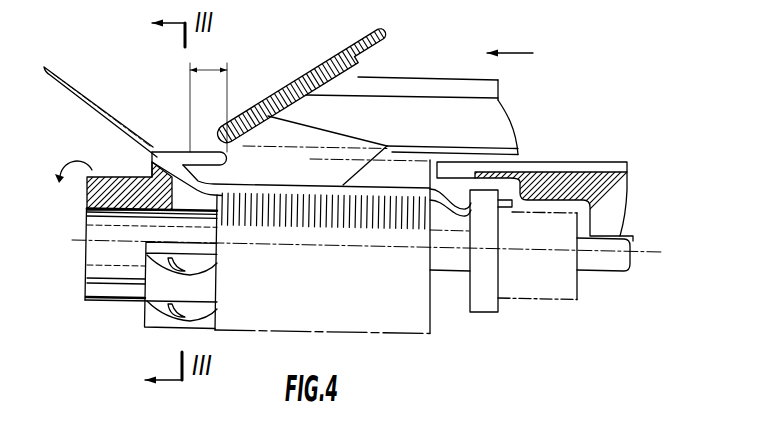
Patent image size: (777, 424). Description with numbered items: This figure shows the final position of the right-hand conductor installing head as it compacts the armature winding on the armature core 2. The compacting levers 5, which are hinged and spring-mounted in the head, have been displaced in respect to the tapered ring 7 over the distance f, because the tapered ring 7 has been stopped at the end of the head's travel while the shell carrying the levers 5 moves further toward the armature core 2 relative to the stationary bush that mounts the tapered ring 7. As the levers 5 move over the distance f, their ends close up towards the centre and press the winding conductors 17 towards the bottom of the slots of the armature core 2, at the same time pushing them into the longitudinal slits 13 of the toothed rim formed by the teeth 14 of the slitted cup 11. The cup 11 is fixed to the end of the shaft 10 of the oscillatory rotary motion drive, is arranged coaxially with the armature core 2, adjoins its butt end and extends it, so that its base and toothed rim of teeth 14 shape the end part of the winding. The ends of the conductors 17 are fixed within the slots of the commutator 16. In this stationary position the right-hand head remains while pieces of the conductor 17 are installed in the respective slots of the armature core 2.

The armature core 2 is at (405, 327).
The compacting levers 5 is at (310, 138).
The tapered ring 7 is at (247, 110).
The shaft 10 is at (90, 257).
The slitted cup 11 is at (115, 187).
The longitudinal slits 13 is at (180, 153).
The tooth 14 is at (203, 322).
The commutator 16 is at (530, 293).
The winding conductors 17 is at (103, 110).
The distance f is at (208, 97).